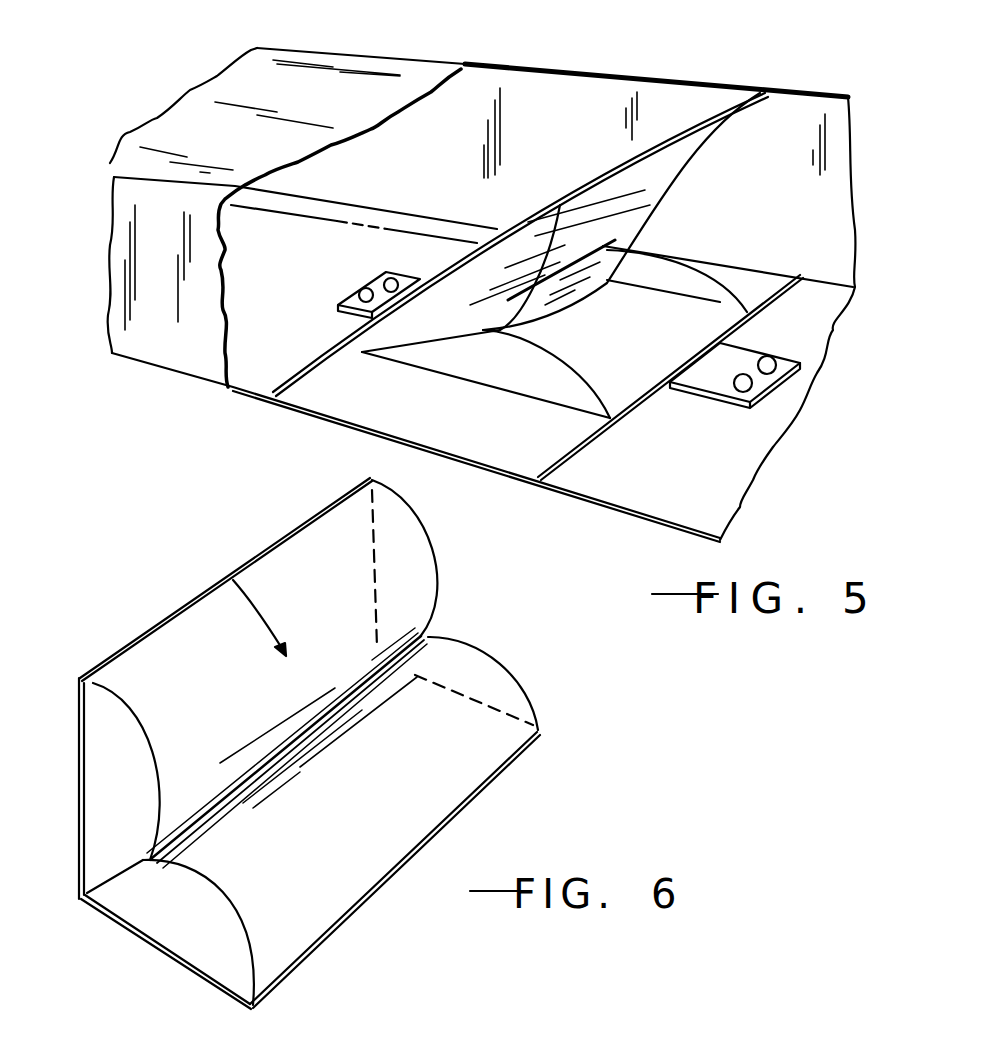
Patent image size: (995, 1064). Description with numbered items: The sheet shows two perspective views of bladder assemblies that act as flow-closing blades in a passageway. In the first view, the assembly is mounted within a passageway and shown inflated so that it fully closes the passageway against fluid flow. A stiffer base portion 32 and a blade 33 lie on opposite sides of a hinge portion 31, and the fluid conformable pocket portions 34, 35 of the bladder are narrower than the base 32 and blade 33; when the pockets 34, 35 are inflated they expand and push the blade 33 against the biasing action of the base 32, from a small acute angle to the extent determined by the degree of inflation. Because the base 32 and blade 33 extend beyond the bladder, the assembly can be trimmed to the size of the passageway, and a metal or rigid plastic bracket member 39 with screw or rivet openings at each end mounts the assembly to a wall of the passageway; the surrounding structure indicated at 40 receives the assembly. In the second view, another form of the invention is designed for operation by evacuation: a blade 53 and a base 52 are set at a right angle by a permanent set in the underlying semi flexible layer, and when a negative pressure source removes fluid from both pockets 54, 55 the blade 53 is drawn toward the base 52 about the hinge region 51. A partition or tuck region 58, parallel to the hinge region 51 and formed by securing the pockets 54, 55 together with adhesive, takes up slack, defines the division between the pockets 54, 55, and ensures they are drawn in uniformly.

In FIG. 5, the hinge portion 31 is at (265, 400).
In FIG. 5, the base portion 32 is at (748, 277).
In FIG. 5, the blade 33 is at (343, 343).
In FIG. 5, the fluid conformable pocket portion 34 is at (657, 280).
In FIG. 5, the fluid conformable pocket portion 35 is at (670, 190).
In FIG. 5, the bracket member 39 is at (713, 402).
In FIG. 5, the top strip 40 is at (636, 64).
In FIG. 6, the hinge region 51 is at (83, 903).
In FIG. 6, the base 52 is at (487, 775).
In FIG. 6, the blade 53 is at (80, 765).
In FIG. 6, the pocket 54 is at (463, 670).
In FIG. 6, the pocket 55 is at (297, 670).
In FIG. 6, the tuck region 58 is at (267, 770).